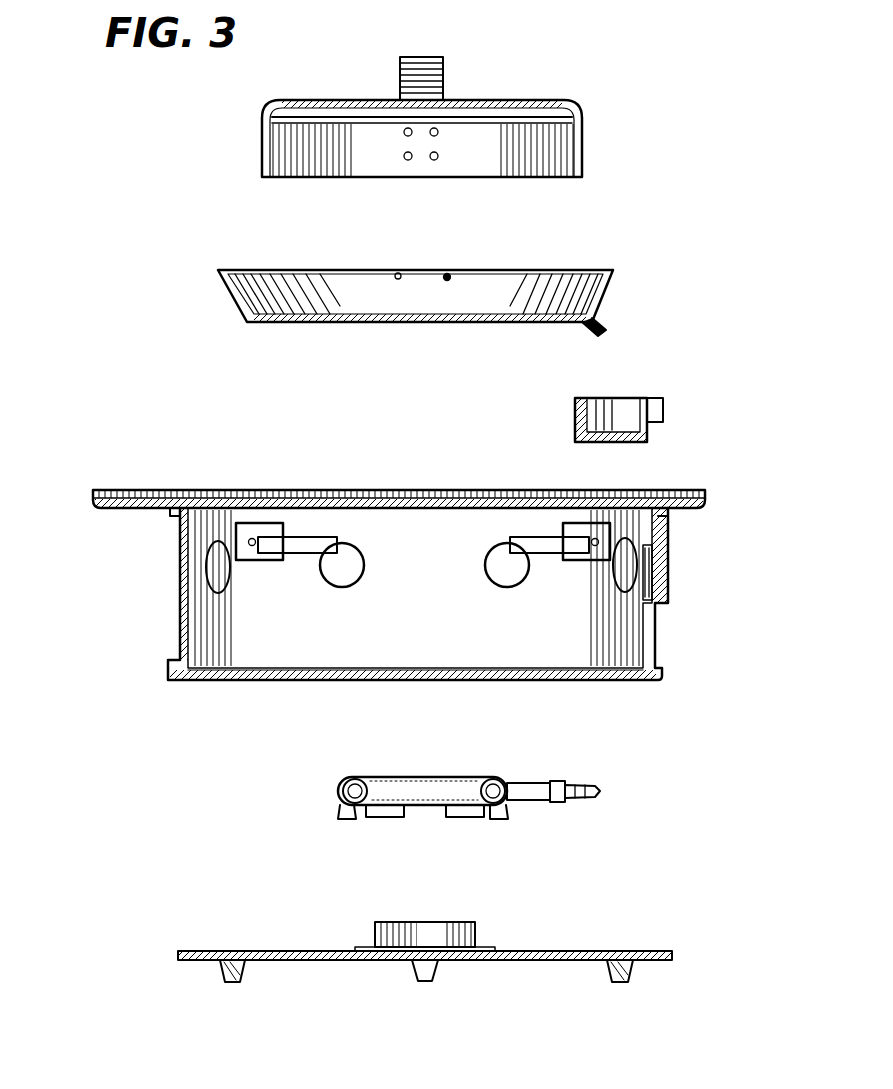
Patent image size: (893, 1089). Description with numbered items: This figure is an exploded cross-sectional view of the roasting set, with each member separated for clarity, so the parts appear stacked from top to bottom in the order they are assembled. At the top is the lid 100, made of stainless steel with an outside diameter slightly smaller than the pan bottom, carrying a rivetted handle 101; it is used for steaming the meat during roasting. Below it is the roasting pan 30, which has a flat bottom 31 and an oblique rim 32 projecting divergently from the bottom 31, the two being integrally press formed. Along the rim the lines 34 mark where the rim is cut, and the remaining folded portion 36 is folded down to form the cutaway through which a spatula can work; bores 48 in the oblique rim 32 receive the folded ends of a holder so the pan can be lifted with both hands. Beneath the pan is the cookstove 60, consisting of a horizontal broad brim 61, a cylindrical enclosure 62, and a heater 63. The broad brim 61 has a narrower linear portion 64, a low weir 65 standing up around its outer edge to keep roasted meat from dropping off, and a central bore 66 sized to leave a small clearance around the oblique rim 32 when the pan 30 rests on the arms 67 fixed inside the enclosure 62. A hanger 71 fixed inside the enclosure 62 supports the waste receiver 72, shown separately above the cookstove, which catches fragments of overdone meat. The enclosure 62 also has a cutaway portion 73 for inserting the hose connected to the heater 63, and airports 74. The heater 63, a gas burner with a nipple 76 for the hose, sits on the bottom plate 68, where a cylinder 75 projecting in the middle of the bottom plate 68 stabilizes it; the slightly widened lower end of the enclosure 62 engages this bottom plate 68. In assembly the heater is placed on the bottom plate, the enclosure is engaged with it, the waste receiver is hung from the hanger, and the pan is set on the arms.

The lid 100 is at (469, 89).
The rivetted handle 101 is at (436, 57).
The roasting pan 30 is at (478, 290).
The flat bottom 31 is at (338, 317).
The oblique rim 32 is at (272, 274).
The lines along which to cut off 34 is at (576, 274).
The folded portion 36 is at (604, 327).
The bores 48 is at (447, 273).
The waste receiver 72 is at (576, 420).
The cookstove 60 is at (404, 552).
The broad brim 61 is at (655, 492).
The enclosure 62 is at (668, 596).
The linear portion 64 is at (705, 499).
The low weir 65 is at (93, 493).
The bore 66 is at (246, 492).
The arms 67 is at (540, 537).
The hanger 71 is at (625, 560).
The cutaway portion 73 is at (647, 637).
The airports 74 is at (330, 568).
The heater 63 is at (469, 774).
The nipple 76 is at (570, 785).
The bottom plate 68 is at (425, 928).
The cylinder 75 is at (478, 937).